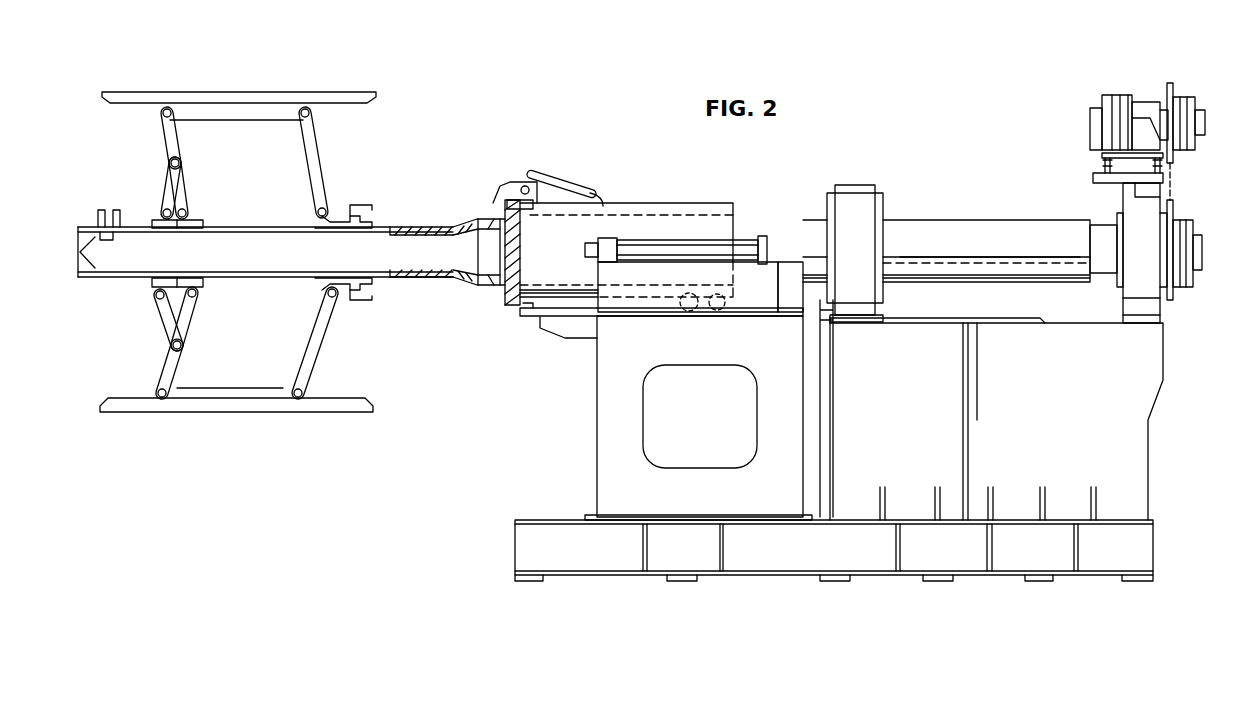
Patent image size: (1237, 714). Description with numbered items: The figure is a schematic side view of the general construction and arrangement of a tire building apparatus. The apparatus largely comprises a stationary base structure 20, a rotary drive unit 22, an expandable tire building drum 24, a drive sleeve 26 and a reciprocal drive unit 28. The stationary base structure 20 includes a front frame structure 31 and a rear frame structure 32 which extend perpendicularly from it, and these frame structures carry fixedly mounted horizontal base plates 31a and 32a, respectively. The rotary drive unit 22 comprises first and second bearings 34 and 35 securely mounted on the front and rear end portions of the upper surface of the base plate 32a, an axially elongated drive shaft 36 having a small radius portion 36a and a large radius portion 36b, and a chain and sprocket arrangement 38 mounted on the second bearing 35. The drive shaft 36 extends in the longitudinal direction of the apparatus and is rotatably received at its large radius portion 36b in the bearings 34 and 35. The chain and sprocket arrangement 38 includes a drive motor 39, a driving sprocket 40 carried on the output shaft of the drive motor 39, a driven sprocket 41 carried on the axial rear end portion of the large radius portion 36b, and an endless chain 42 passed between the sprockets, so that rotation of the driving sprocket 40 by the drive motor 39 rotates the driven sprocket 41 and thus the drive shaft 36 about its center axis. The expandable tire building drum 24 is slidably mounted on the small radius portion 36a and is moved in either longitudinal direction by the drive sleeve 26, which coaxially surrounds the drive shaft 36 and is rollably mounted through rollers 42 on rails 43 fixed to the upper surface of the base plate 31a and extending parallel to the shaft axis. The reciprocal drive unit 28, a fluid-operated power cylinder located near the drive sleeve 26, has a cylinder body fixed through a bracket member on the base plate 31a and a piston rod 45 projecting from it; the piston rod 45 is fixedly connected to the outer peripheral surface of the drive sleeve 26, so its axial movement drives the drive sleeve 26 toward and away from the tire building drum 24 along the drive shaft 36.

The stationary base structure 20 is at (520, 541).
The rotary drive unit 22 is at (1082, 172).
The expandable tire building drum 24 is at (295, 84).
The drive sleeve 26 is at (652, 203).
The reciprocal drive unit 28 is at (744, 238).
The front frame structure 31 is at (600, 425).
The horizontal base plate 31a is at (766, 317).
The rear frame structure 32 is at (1155, 368).
The horizontal base plate 32a is at (1065, 319).
The first bearing 34 is at (848, 190).
The second bearing 35 is at (1122, 196).
The axially elongated drive shaft 36 is at (966, 220).
The small radius portion 36a is at (400, 246).
The large radius portion 36b is at (970, 259).
The chain and sprocket arrangement 38 is at (1140, 97).
The drive motor 39 is at (1116, 96).
The driving sprocket 40 is at (1195, 120).
The driven sprocket 41 is at (1177, 212).
The endless chain 42 is at (718, 310).
The rails 43 is at (526, 306).
The piston rod 45 is at (598, 246).